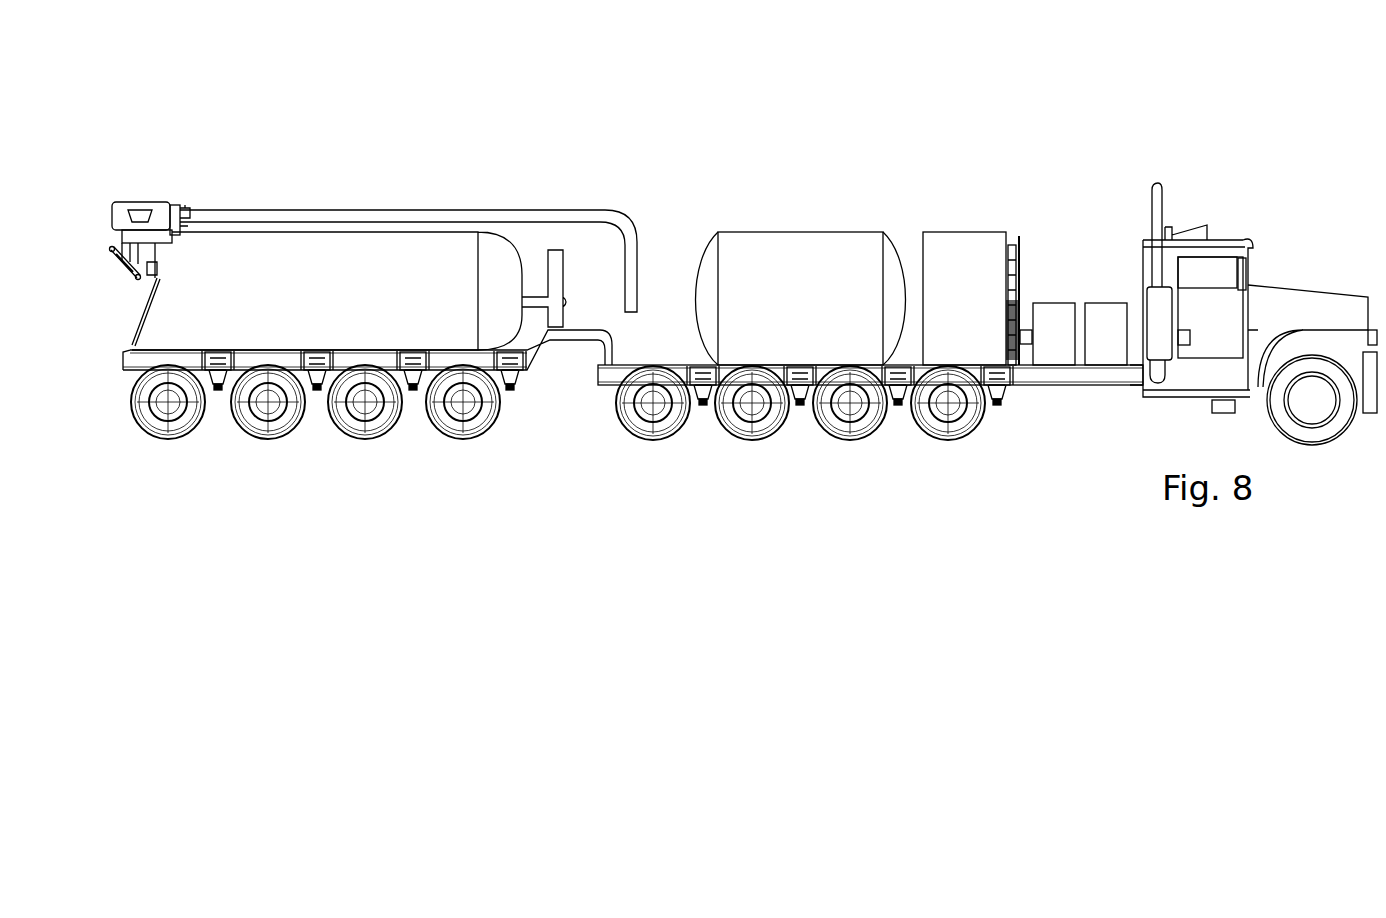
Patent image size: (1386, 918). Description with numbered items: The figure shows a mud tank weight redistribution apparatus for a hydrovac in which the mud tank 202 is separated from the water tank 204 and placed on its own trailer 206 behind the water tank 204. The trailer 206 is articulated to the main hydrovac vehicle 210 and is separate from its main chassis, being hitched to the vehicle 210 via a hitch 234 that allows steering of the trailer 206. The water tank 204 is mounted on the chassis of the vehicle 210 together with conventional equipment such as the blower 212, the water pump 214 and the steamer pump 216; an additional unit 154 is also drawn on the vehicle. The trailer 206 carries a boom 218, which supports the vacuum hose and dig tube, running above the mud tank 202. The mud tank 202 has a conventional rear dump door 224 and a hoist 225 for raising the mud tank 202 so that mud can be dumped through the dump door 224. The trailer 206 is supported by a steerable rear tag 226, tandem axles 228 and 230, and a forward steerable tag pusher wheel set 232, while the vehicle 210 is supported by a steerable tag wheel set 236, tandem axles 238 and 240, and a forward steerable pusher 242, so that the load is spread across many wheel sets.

The control unit 154 is at (1027, 313).
The mud tank 202 is at (352, 272).
The water tank 204 is at (795, 232).
The trailer 206 is at (482, 108).
The vehicle 210 is at (740, 108).
The blower 212 is at (972, 232).
The water pump 214 is at (1050, 303).
The steamer pump 216 is at (1110, 303).
The boom 218 is at (387, 215).
The rear dump door 224 is at (130, 328).
The hoist 225 is at (127, 278).
The steerable rear tag 226 is at (188, 438).
The tandem axle 228 is at (288, 438).
The tandem axle 230 is at (385, 438).
The forward steerable tag pusher wheel set 232 is at (485, 438).
The hitch 234 is at (602, 333).
The steerable tag wheel set 236 is at (660, 442).
The tandem axle 238 is at (775, 434).
The tandem axle 240 is at (878, 434).
The forward steerable pusher 242 is at (968, 436).